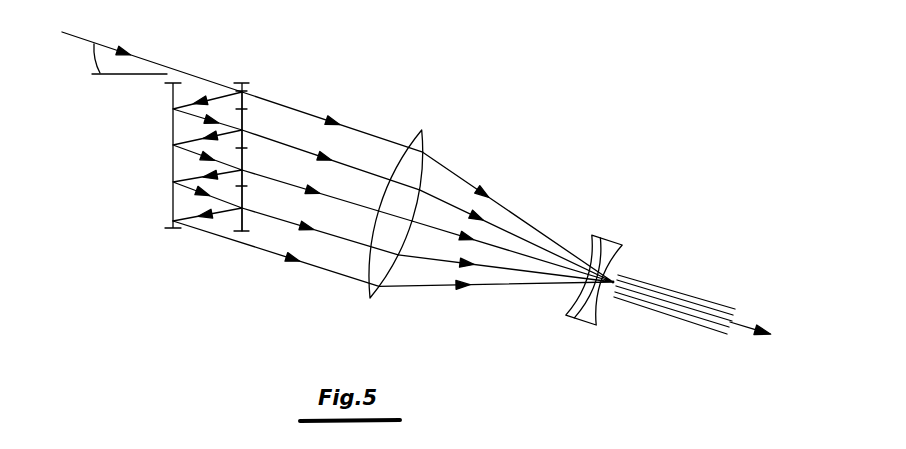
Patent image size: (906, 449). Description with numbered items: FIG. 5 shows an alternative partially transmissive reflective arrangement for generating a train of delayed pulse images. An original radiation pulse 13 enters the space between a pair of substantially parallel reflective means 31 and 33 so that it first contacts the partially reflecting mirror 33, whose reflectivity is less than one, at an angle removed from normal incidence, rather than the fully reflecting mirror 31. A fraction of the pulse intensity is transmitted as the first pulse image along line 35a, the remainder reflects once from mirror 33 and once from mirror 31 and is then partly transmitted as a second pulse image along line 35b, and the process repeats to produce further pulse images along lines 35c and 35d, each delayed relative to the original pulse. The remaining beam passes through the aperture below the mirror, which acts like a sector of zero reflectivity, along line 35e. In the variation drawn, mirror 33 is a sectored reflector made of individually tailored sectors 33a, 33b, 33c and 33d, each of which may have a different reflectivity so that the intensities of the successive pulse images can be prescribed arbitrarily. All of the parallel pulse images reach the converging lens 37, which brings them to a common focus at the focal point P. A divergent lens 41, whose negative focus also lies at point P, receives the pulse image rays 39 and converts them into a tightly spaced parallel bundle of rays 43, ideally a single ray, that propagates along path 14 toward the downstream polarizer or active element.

The original radiation pulse 13 is at (90, 41).
The propagation path toward polarizer and/or active element 14 is at (745, 323).
The reflective means 31 is at (172, 95).
The reflective means 33 is at (243, 82).
The sectored reflective means 33a is at (243, 109).
The sectored reflective means 33b is at (243, 129).
The sectored reflective means 33c is at (243, 187).
The sectored reflective means 33d is at (241, 231).
The first pulse image path 35a is at (366, 131).
The second pulse image path 35b is at (300, 149).
The third pulse image path 35c is at (300, 186).
The fourth pulse image path 35d is at (260, 214).
The last pulse image path 35e is at (268, 251).
The converging lens 37 is at (371, 290).
The pulse image rays 39 is at (463, 180).
The divergent lens 41 is at (605, 245).
The parallel bundle of rays 43 is at (672, 290).
The focal point P is at (613, 282).